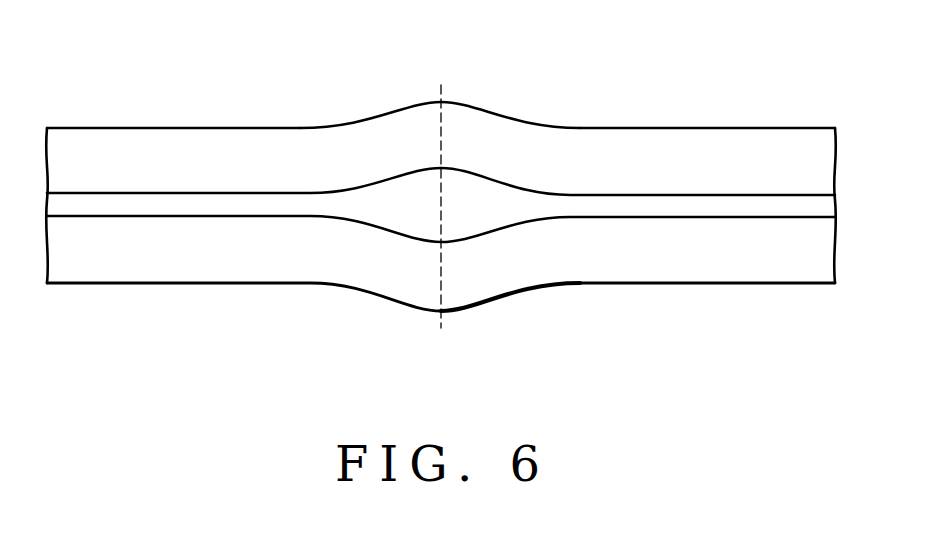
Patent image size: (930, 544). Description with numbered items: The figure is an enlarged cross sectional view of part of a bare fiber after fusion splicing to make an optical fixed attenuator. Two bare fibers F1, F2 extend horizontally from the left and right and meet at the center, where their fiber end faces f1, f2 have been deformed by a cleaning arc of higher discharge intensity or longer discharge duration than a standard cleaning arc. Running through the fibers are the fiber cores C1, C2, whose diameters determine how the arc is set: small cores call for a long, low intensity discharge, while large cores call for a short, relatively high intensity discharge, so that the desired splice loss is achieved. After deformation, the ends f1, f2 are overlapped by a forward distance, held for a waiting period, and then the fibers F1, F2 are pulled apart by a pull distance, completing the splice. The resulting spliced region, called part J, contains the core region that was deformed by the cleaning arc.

The bare fiber F1 is at (243, 184).
The bare fiber F2 is at (638, 181).
The fiber end face f1 is at (408, 107).
The fiber end face f2 is at (472, 106).
The fiber core C1 is at (408, 210).
The fiber core C2 is at (480, 205).
The spliced region J is at (452, 326).